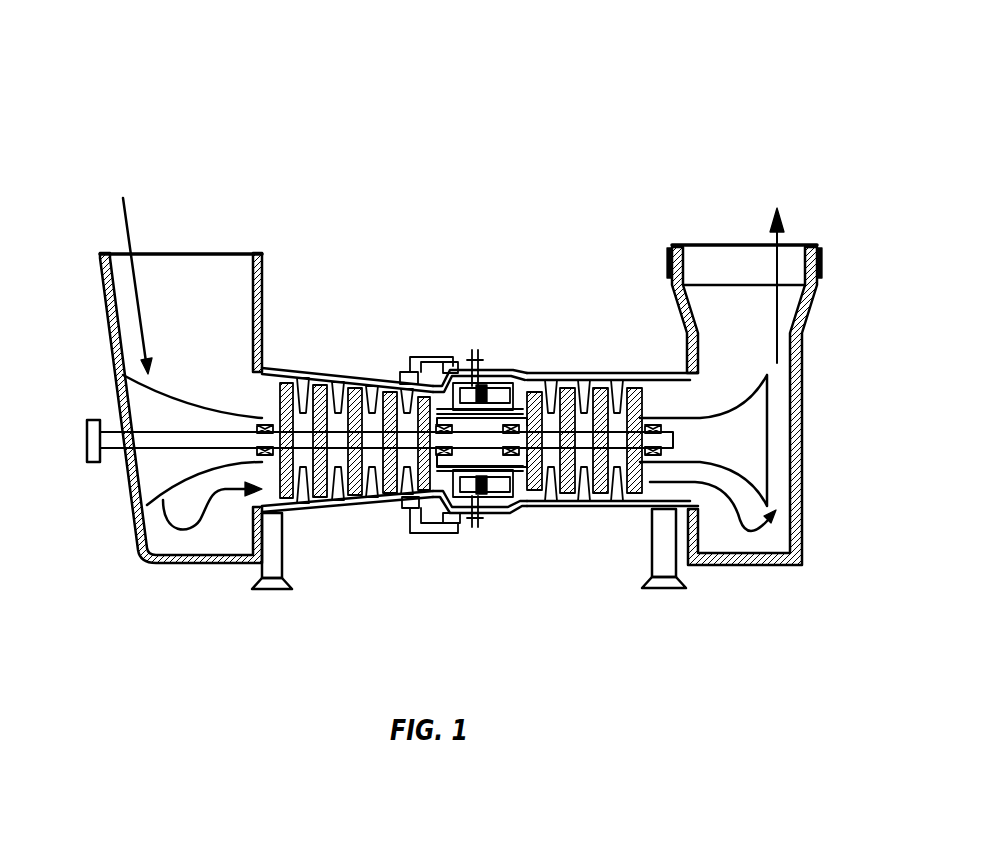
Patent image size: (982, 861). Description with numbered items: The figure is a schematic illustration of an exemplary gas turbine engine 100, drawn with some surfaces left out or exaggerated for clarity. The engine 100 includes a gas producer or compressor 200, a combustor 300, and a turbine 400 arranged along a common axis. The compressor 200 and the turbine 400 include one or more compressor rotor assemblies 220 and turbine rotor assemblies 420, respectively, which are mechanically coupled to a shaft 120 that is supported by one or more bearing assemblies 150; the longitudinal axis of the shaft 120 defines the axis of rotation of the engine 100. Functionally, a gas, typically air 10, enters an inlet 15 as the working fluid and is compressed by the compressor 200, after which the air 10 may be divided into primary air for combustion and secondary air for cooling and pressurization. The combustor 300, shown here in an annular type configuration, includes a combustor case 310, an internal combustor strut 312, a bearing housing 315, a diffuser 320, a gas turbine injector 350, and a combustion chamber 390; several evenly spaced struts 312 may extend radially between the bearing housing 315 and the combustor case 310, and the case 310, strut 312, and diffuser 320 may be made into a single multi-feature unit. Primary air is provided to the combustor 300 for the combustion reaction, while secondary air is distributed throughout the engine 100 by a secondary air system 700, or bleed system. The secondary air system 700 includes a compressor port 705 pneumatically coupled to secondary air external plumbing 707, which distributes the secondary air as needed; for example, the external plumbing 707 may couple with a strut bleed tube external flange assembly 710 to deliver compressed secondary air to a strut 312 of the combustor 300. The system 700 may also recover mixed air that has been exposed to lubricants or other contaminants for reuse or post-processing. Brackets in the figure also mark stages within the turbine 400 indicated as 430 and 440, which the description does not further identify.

The gas turbine engine 100 is at (106, 37).
The air 10 is at (124, 224).
The inlet 15 is at (104, 296).
The shaft 120 is at (163, 442).
The bearing assembly 150 is at (266, 456).
The compressor 200 is at (433, 262).
The compressor rotor assembly 220 is at (326, 498).
The combustor 300 is at (528, 262).
The combustor case 310 is at (508, 368).
The internal combustor strut 312 is at (468, 366).
The bearing housing 315 is at (510, 474).
The diffuser 320 is at (407, 357).
The gas turbine injector 350 is at (487, 370).
The combustion chamber 390 is at (518, 378).
The turbine 400 is at (640, 262).
The turbine rotor assembly 420 is at (572, 492).
The first turbine stage 430 is at (578, 367).
The second turbine stage 440 is at (638, 367).
The secondary air system 700 is at (463, 607).
The compressor port 705 is at (405, 510).
The secondary air external plumbing 707 is at (437, 535).
The strut bleed tube external flange assembly 710 is at (459, 522).